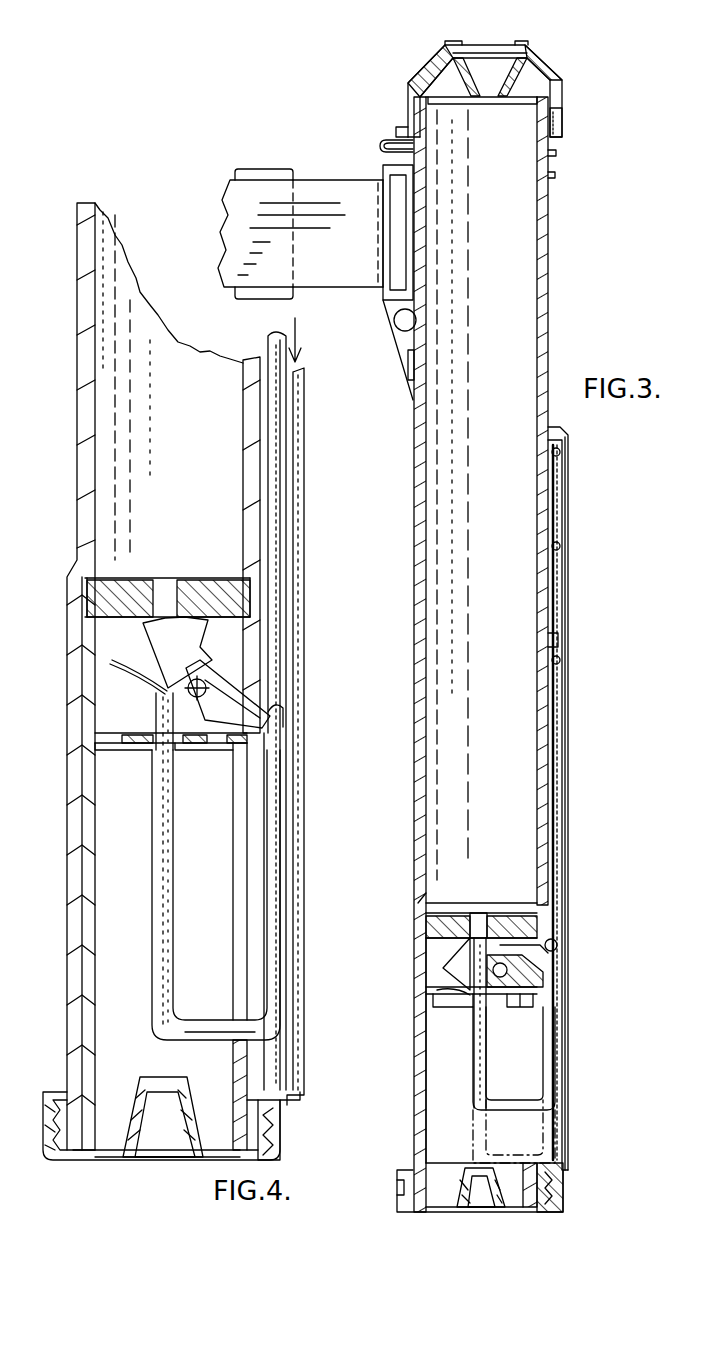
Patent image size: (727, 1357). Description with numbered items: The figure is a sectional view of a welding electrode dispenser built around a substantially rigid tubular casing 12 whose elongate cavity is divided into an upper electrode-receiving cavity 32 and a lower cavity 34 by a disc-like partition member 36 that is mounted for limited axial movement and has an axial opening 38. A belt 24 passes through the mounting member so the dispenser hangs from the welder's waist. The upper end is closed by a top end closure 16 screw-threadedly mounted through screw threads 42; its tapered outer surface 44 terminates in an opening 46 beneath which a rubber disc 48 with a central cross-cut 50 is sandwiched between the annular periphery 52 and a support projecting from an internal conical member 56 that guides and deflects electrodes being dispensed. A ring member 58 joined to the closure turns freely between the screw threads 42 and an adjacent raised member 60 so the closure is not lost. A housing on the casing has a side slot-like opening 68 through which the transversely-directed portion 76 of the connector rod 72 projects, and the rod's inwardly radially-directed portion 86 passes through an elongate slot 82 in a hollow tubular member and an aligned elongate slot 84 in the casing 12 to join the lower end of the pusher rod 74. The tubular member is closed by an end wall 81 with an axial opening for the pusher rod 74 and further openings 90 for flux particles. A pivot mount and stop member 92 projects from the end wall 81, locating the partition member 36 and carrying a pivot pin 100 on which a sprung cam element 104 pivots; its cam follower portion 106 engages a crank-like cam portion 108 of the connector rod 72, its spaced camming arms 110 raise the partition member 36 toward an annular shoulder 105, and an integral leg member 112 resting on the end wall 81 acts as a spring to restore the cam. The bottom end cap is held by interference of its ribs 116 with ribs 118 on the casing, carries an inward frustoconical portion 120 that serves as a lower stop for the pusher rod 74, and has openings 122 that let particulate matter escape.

In FIG. 3, the tubular casing 12 is at (548, 320).
In FIG. 3, the top end closure 16 is at (562, 64).
In FIG. 3, the belt 24 is at (328, 190).
In FIG. 3, the electrode-receiving cavity 32 is at (545, 606).
In FIG. 4, the electrode-receiving cavity 32 is at (90, 405).
In FIG. 3, the lower cavity 34 is at (420, 1118).
In FIG. 3, the disc-like partition member 36 is at (500, 918).
In FIG. 4, the disc-like partition member 36 is at (120, 597).
In FIG. 3, the axial opening 38 is at (480, 916).
In FIG. 3, the screw threads 42 is at (563, 118).
In FIG. 3, the tapered outer surface 44 is at (408, 84).
In FIG. 3, the opening 46 is at (455, 41).
In FIG. 3, the rubber disc 48 is at (495, 60).
In FIG. 3, the cross-cut 50 is at (488, 48).
In FIG. 3, the annular periphery 52 is at (528, 45).
In FIG. 3, the conical member 56 is at (515, 100).
In FIG. 3, the ring member 58 is at (556, 153).
In FIG. 3, the raised member 60 is at (554, 178).
In FIG. 3, the side slot-like opening 68 is at (569, 512).
In FIG. 3, the connector rod 72 is at (558, 750).
In FIG. 3, the pusher rod 74 is at (475, 1085).
In FIG. 4, the pusher rod 74 is at (172, 880).
In FIG. 3, the transversely-directed portion 76 is at (560, 455).
In FIG. 3, the end wall 81 is at (515, 1005).
In FIG. 3, the elongate slot 82 is at (535, 1140).
In FIG. 4, the elongate slot 82 is at (240, 900).
In FIG. 4, the elongate slot 84 is at (253, 934).
In FIG. 4, the inwardly radially-directed portion 86 is at (200, 1020).
In FIG. 3, the openings 90 is at (460, 1005).
In FIG. 3, the pivot mount and stop member 92 is at (423, 992).
In FIG. 4, the pivot pin 100 is at (201, 694).
In FIG. 3, the sprung cam element 104 is at (535, 975).
In FIG. 4, the annular shoulder 105 is at (92, 578).
In FIG. 3, the cam follower portion 106 is at (528, 963).
In FIG. 4, the cam follower portion 106 is at (262, 712).
In FIG. 3, the crank-like cam portion 108 is at (557, 944).
In FIG. 4, the crank-like cam portion 108 is at (284, 714).
In FIG. 3, the camming arms 110 is at (455, 955).
In FIG. 4, the camming arms 110 is at (160, 625).
In FIG. 3, the leg member 112 is at (455, 993).
In FIG. 4, the leg member 112 is at (118, 668).
In FIG. 4, the ribs 116 is at (281, 1120).
In FIG. 4, the ribs 118 is at (50, 1090).
In FIG. 4, the frustoconical portion 120 is at (138, 1090).
In FIG. 3, the openings 122 is at (503, 1200).